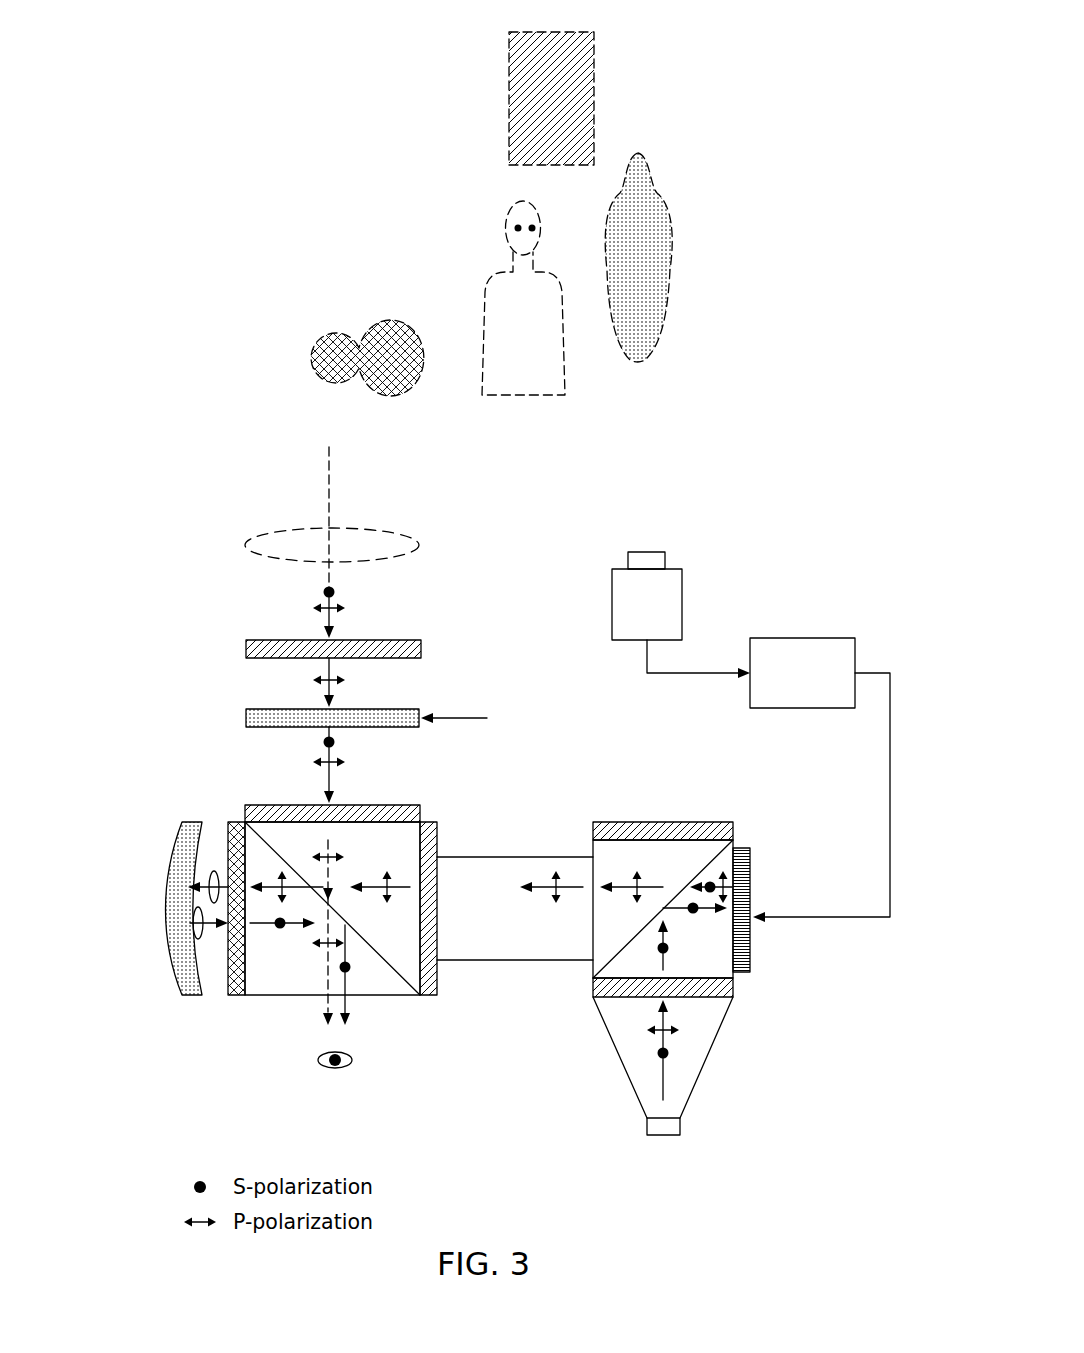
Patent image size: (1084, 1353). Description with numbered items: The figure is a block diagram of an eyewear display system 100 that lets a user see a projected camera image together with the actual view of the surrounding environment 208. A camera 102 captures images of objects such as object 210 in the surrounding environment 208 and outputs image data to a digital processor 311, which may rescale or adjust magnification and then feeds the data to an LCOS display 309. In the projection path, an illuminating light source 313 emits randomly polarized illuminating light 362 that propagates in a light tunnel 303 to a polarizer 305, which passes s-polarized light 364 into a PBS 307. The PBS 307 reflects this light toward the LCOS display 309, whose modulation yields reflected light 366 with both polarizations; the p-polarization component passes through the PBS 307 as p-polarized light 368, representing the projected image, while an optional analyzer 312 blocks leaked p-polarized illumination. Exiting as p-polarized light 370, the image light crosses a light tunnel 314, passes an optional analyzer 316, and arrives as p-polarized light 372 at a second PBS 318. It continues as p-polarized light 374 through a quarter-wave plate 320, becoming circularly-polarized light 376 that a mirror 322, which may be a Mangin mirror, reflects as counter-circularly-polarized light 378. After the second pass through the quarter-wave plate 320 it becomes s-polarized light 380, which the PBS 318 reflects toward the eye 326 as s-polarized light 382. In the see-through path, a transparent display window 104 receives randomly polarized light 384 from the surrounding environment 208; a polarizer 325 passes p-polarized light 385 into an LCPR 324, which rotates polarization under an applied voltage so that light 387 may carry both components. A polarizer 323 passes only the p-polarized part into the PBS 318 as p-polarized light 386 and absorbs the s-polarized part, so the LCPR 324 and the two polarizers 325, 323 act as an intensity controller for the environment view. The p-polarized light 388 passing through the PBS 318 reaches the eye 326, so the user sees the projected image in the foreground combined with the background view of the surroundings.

The eyewear display system 100 is at (778, 586).
The camera 102 is at (629, 614).
The transparent display window 104 is at (394, 538).
The surrounding environment 208 is at (398, 180).
The object 210 is at (565, 373).
The light tunnel 303 is at (702, 1062).
The polarizer 305 is at (735, 988).
The PBS (polarizing beam splitter) 307 is at (679, 966).
The LCOS display 309 is at (752, 872).
The digital processor 311 is at (785, 686).
The analyzer 312 is at (718, 821).
The illuminating light source 313 is at (683, 1120).
The light tunnel 314 is at (489, 937).
The analyzer 316 is at (439, 830).
The PBS (polarizing beam splitter) 318 is at (267, 972).
The quarter-wave plate 320 is at (243, 822).
The mirror 322 is at (168, 873).
The polarizer 323 is at (420, 805).
The LCPR (liquid crystal polarization rotator) 324 is at (398, 706).
The polarizer 325 is at (400, 637).
The eye 326 is at (357, 1065).
The illuminating light 362 is at (663, 1080).
The s-polarized light 364 is at (645, 979).
The reflected light 366 is at (707, 874).
The p-polarized light 368 is at (628, 886).
The p-polarized light 370 is at (550, 886).
The p-polarized light 372 is at (398, 888).
The p-polarized light 374 is at (272, 885).
The circularly-polarized light 376 is at (186, 822).
The counter-circularly-polarized light 378 is at (178, 995).
The s-polarized light 380 is at (237, 994).
The s-polarized light 382 is at (347, 980).
The randomly polarized light 384 is at (334, 584).
The p-polarized light 385 is at (333, 676).
The p-polarized light 386 is at (332, 877).
The light 387 is at (333, 778).
The p-polarized light 388 is at (325, 987).